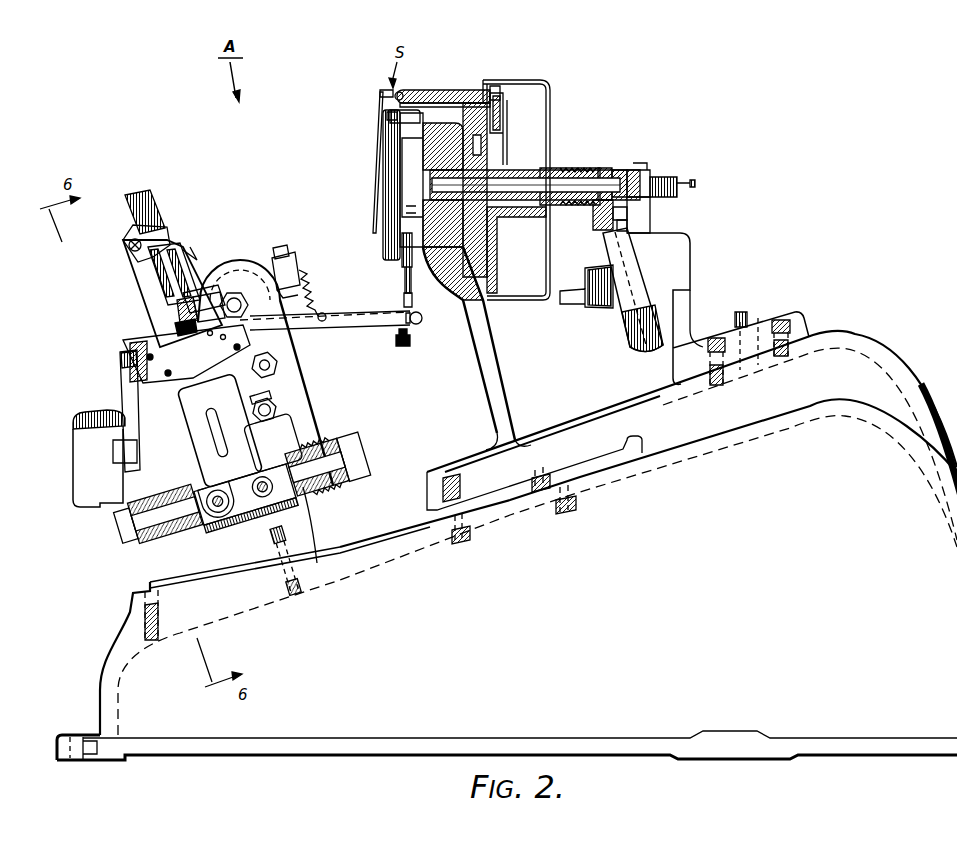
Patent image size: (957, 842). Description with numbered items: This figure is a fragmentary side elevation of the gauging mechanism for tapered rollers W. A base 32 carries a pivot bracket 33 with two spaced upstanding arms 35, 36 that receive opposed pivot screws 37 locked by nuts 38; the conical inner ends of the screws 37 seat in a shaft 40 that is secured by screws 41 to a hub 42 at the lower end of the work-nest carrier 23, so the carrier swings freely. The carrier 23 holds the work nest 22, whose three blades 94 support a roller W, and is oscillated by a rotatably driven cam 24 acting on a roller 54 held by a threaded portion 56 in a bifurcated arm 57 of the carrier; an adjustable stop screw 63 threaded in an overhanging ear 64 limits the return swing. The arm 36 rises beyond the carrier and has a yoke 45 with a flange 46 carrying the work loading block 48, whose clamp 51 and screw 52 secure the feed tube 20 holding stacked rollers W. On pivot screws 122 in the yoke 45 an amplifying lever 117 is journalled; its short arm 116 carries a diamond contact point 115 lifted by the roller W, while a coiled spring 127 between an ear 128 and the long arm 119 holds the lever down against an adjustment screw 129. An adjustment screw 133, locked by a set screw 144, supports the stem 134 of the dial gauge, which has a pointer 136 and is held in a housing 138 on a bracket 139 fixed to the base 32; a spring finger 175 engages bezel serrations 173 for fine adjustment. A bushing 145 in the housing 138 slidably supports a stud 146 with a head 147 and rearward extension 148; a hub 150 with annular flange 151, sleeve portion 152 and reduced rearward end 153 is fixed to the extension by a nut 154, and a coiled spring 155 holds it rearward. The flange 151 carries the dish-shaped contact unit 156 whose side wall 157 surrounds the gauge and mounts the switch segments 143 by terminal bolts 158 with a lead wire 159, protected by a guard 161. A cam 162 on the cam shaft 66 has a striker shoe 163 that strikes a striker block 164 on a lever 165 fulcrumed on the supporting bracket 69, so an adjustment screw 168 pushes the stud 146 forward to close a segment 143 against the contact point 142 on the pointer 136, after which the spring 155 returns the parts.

The feed tube 20 is at (133, 194).
The work nest 22 is at (150, 342).
The work-nest carrier 23 is at (258, 462).
The cam 24 is at (128, 397).
The base 32 is at (860, 723).
The pivot bracket 33 is at (170, 598).
The upstanding arm 35 is at (170, 568).
The upstanding arm 36 is at (308, 422).
The pivot screws 37 is at (366, 453).
The nuts 38 is at (366, 473).
The shaft 40 is at (208, 516).
The screws 41 is at (261, 500).
The hub 42 is at (290, 532).
The yoke 45 is at (250, 268).
The flange 46 is at (183, 250).
The work loading block 48 is at (150, 273).
The clamp 51 is at (150, 240).
The screw 52 is at (131, 241).
The roller 54 is at (107, 415).
The threaded portion 56 is at (113, 452).
The bifurcated arm 57 is at (110, 427).
The adjustable stop screw 63 is at (275, 408).
The overhanging ear 64 is at (280, 398).
The cam shaft 66 is at (577, 307).
The supporting bracket 69 is at (687, 357).
The blades 94 is at (165, 371).
The contact point 115 is at (215, 320).
The short arm 116 is at (195, 310).
The amplifying lever 117 is at (212, 293).
The long arm 119 is at (347, 322).
The pivot screws 122 is at (233, 297).
The coiled spring 127 is at (320, 284).
The ear 128 is at (300, 268).
The adjustment screw 129 is at (284, 250).
The adjustment screw 133 is at (403, 348).
The stem 134 is at (404, 298).
The pointer 136 is at (376, 157).
The housing 138 is at (393, 230).
The bracket 139 is at (490, 443).
The contact point 142 is at (383, 88).
The switch segments 143 is at (399, 92).
The set screw 144 is at (422, 320).
The bushing 145 is at (508, 186).
The stud 146 is at (548, 190).
The head 147 is at (433, 181).
The rearward extension 148 is at (583, 177).
The hub 150 is at (533, 137).
The annular flange 151 is at (475, 140).
The sleeve portion 152 is at (513, 217).
The reduced rearward end 153 is at (617, 173).
The nut 154 is at (640, 170).
The coiled spring 155 is at (552, 180).
The contact unit 156 is at (490, 86).
The side wall 157 is at (423, 90).
The terminal bolts 158 is at (460, 90).
The lead wire 159 is at (505, 118).
The guard 161 is at (527, 80).
The cam 162 is at (637, 343).
The striker shoe 163 is at (627, 208).
The striker block 164 is at (630, 218).
The lever 165 is at (643, 205).
The adjustment screw 168 is at (683, 185).
The serrations 173 is at (390, 118).
The spring finger 175 is at (392, 112).
The tapered rollers W is at (190, 330).